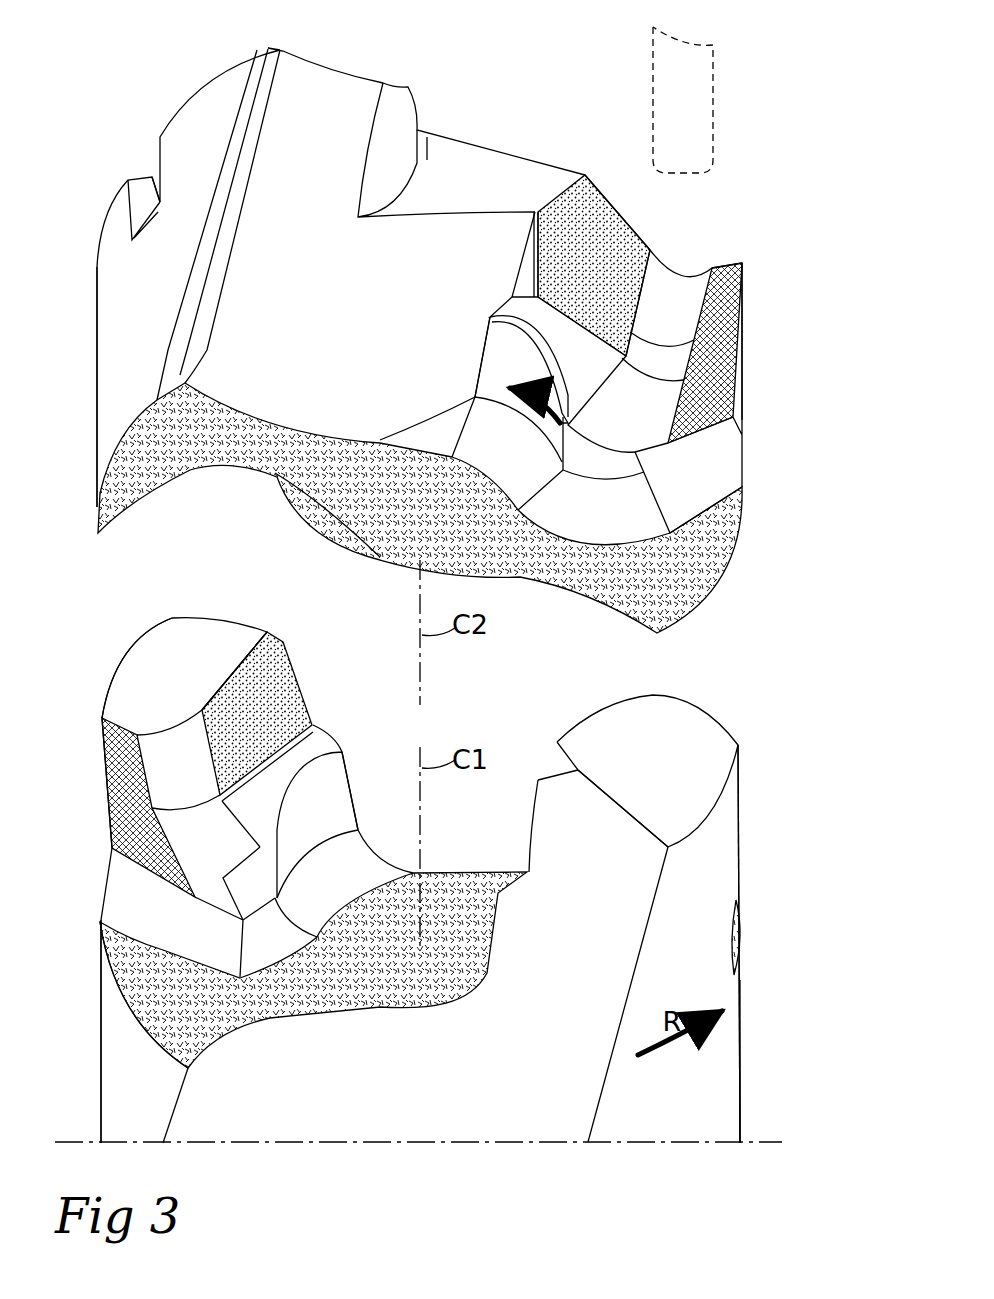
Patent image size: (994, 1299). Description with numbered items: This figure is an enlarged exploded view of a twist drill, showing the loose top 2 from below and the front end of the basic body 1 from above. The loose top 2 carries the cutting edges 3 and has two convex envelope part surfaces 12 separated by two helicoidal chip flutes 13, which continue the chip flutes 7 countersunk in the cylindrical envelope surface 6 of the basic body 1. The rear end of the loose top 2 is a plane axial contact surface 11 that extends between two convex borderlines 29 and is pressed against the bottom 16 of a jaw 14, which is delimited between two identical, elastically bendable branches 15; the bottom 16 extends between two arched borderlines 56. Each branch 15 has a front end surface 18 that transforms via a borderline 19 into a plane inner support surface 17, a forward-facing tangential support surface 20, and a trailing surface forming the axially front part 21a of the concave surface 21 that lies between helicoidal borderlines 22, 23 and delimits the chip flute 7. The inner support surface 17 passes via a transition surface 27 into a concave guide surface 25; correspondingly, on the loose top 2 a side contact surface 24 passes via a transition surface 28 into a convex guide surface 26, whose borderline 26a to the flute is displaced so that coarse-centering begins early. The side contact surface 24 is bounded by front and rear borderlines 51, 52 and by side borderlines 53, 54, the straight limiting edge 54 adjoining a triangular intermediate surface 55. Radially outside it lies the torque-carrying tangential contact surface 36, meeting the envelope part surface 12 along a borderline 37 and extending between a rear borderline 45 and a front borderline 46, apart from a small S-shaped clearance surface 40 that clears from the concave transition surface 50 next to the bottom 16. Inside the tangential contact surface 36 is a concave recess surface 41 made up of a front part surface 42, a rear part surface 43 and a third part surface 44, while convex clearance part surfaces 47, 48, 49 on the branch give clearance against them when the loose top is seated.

The basic body 1 is at (95, 790).
The loose top 2 is at (100, 195).
The cutting edges 3 is at (335, 73).
The cylindrical envelope surface 6 is at (114, 1102).
The chip flutes 7 is at (618, 960).
The plane surface 11 is at (450, 539).
The convex part surfaces 12 is at (114, 327).
The chip flutes 13 is at (316, 341).
The jaw 14 is at (357, 723).
The branches 15 is at (122, 654).
The bottom 16 is at (351, 974).
The inner support surface 17 is at (241, 727).
The front end surface 18 is at (158, 686).
The borderline 19 is at (233, 675).
The tangential support surface 20 is at (121, 847).
The concave surface 21 is at (398, 1099).
The axially front part of the concave surface 21a is at (578, 894).
The helicoidal borderline 22 is at (608, 1072).
The helicoidal borderline 23 is at (177, 1107).
The side contact surface 24 is at (581, 274).
The concave guide surfaces 25 is at (299, 819).
The convex guide surfaces 26 is at (503, 369).
The borderline 26a is at (485, 345).
The transition surface 27 is at (243, 814).
The transition surface 28 is at (522, 310).
The convex borderlines 29 is at (112, 457).
The tangential contact surface 36 is at (696, 392).
The borderline 37 is at (742, 333).
The clearance surface 40 is at (674, 492).
The concave recess surface 41 is at (722, 100).
The front part surface 42 is at (654, 317).
The rear part surface 43 is at (587, 463).
The third concave part surface 44 is at (611, 417).
The rear borderline 45 is at (708, 433).
The front borderline 46 is at (726, 265).
The convex part surface 47 is at (169, 771).
The convex part surface 48 is at (241, 899).
The convex part surface 49 is at (203, 844).
The concave transition surface 50 is at (307, 894).
The front borderline 51 is at (618, 200).
The rear borderline 52 is at (598, 333).
The side borderline 53 is at (648, 267).
The limiting edge 54 is at (533, 230).
The triangular intermediate surface 55 is at (527, 273).
The arched borderlines 56 is at (133, 1023).